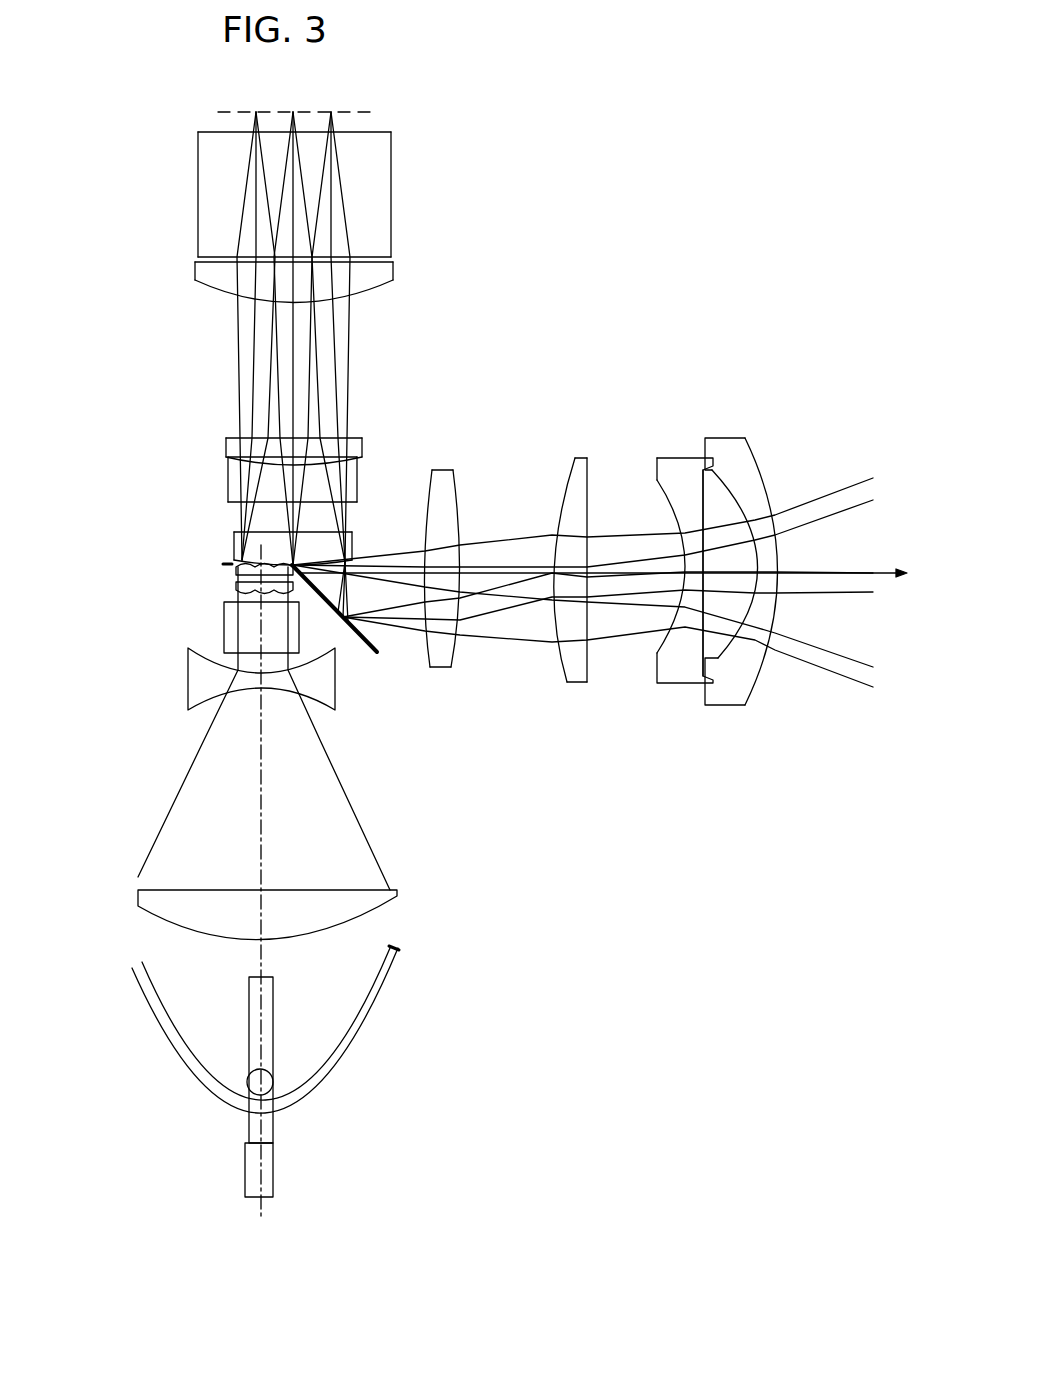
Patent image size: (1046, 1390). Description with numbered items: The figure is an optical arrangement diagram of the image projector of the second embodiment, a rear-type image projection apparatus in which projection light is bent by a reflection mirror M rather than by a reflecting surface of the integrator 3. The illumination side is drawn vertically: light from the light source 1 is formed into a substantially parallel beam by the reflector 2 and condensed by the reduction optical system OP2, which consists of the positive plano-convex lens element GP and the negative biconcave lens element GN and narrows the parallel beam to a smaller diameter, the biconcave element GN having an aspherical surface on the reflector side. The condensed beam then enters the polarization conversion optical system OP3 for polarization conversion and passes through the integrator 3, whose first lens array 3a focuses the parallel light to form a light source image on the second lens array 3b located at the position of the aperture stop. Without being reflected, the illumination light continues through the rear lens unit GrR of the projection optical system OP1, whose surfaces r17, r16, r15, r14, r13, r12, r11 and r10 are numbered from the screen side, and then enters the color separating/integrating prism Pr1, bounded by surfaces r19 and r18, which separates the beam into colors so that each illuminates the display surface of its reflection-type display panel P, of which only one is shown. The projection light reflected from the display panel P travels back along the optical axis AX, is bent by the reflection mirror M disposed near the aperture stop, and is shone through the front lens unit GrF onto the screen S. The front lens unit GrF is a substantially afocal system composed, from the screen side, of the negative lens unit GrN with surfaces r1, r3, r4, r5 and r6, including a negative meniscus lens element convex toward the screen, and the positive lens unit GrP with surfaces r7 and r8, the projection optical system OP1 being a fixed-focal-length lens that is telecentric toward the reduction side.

The reflection-type display panel P is at (304, 105).
The color separating/integrating prism Pr1 is at (336, 179).
The nineteenth surface r19 is at (372, 133).
The eighteenth surface r18 is at (365, 257).
The seventeenth surface r17 is at (392, 272).
The sixteenth surface r16 is at (368, 293).
The fifteenth surface r15 is at (348, 438).
The fourteenth surface r14 is at (355, 458).
The thirteenth surface r13 is at (350, 462).
The twelfth surface r12 is at (347, 503).
The eleventh surface r11 is at (237, 533).
The tenth surface r10 is at (235, 553).
The rear lens unit GrR is at (132, 567).
The reflection mirror M is at (322, 596).
The polarization conversion optical system OP3 is at (299, 640).
The integrator 3 is at (145, 568).
The first lens array 3a is at (236, 588).
The second lens array 3b is at (236, 572).
The reduction optical system OP2 is at (134, 948).
The negative biconcave lens element GN is at (337, 700).
The positive plano-convex lens element GP is at (397, 892).
The reflector 2 is at (373, 1000).
The light source 1 is at (273, 1082).
The projection optical system OP1 is at (772, 340).
The front lens unit GrF is at (772, 382).
The positive lens unit GrP is at (449, 562).
The negative lens unit GrN is at (772, 430).
The eighth surface r8 is at (425, 653).
The seventh surface r7 is at (455, 653).
The sixth surface r6 is at (563, 660).
The fifth surface r5 is at (590, 660).
The fourth surface r4 is at (653, 657).
The third surface r3 is at (705, 650).
The first surface r1 is at (755, 683).
The optical axis AX is at (845, 573).
The screen S is at (926, 589).